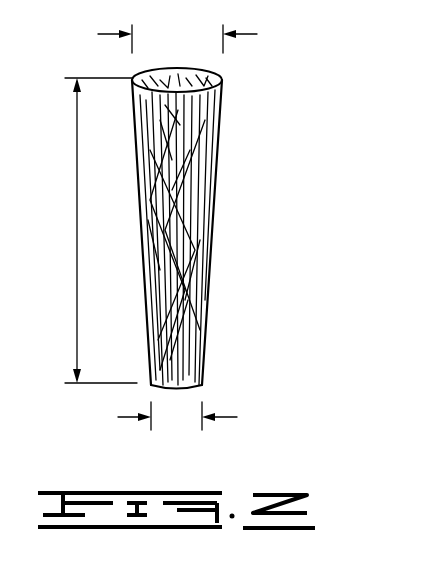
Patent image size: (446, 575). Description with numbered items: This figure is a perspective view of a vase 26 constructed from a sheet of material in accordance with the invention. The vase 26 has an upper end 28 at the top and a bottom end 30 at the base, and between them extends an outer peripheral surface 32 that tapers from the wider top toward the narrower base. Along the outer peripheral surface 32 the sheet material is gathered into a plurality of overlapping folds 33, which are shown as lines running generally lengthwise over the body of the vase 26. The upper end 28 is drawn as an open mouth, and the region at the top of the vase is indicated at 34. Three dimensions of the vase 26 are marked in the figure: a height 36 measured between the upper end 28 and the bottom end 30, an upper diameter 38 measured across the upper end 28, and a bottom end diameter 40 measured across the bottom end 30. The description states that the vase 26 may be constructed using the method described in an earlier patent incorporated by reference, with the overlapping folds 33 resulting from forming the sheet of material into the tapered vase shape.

The vase 26 is at (214, 218).
The upper end 28 is at (222, 79).
The bottom end 30 is at (203, 388).
The outer peripheral surface 32 is at (198, 283).
The overlapping folds 33 is at (200, 126).
The top surface 34 is at (206, 73).
The height 36 is at (77, 228).
The upper diameter 38 is at (257, 34).
The bottom end diameter 40 is at (237, 417).